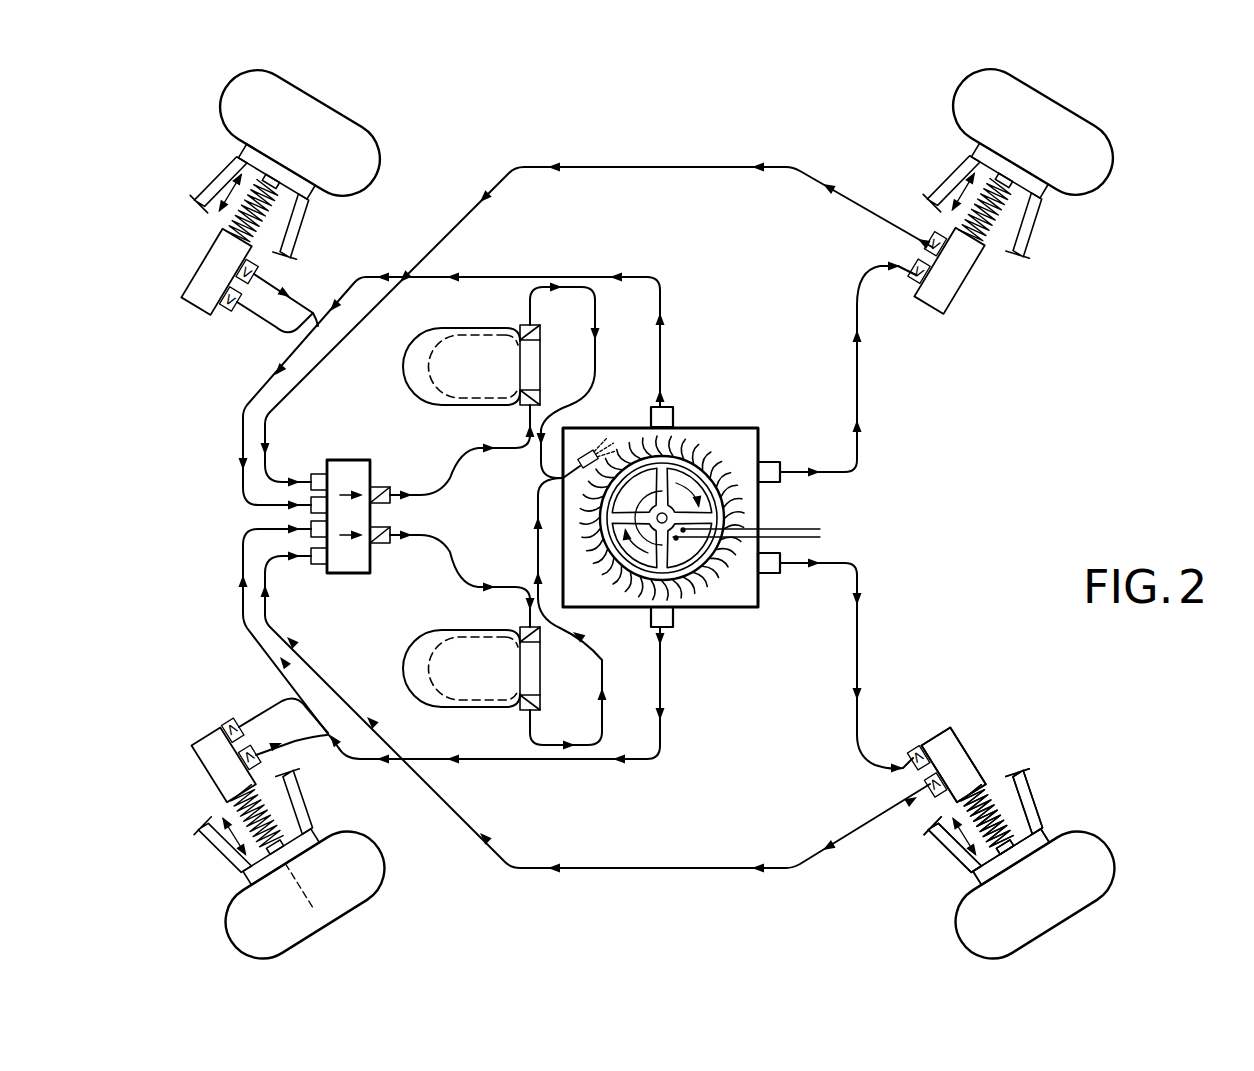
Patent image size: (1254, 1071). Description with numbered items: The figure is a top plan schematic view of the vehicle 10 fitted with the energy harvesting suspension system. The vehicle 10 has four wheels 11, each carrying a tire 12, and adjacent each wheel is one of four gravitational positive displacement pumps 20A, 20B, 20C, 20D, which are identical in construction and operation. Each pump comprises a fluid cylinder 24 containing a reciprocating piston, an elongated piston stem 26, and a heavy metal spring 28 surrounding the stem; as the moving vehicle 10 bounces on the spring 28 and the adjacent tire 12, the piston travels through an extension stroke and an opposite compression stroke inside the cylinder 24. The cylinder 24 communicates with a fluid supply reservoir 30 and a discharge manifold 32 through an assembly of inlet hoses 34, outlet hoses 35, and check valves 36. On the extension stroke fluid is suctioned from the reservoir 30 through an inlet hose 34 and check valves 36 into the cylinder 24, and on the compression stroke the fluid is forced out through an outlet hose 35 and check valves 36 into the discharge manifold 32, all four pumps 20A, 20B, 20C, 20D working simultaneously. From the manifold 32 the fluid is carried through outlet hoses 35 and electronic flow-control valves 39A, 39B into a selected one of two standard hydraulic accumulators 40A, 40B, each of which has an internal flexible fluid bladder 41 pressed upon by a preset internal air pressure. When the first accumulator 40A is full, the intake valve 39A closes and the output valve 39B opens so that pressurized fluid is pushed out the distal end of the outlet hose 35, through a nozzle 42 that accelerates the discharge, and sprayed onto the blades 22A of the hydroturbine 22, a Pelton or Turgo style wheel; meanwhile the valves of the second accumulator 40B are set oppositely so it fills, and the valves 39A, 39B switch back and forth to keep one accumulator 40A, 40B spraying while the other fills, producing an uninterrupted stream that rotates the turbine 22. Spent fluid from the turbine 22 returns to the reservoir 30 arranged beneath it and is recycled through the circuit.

The vehicle 10 is at (455, 165).
The wheel 11 is at (293, 190).
The tire 12 is at (330, 123).
The gravitational positive displacement pump 20A is at (178, 767).
The gravitational positive displacement pump 20B is at (176, 283).
The gravitational positive displacement pump 20C is at (975, 293).
The gravitational positive displacement pump 20D is at (990, 750).
The hydroturbine 22 is at (705, 511).
The turbine blades 22A is at (717, 573).
The fluid cylinder 24 is at (947, 732).
The piston stem 26 is at (1003, 827).
The spring 28 is at (993, 793).
The fluid supply reservoir 30 is at (732, 428).
The discharge manifold 32 is at (345, 460).
The inlet hose 34 is at (647, 275).
The outlet hose 35 is at (852, 198).
The check valve 36 is at (260, 277).
The electronic flow-control intake valve 39A is at (380, 485).
The electronic flow-control output valve 39B is at (518, 338).
The hydraulic accumulator 40A is at (457, 328).
The hydraulic accumulator 40B is at (403, 672).
The fluid bladder 41 is at (403, 367).
The nozzle 42 is at (588, 447).